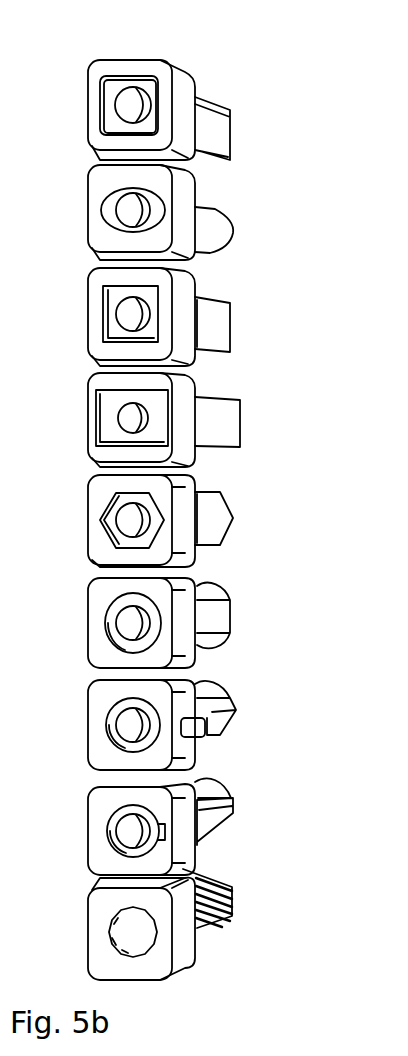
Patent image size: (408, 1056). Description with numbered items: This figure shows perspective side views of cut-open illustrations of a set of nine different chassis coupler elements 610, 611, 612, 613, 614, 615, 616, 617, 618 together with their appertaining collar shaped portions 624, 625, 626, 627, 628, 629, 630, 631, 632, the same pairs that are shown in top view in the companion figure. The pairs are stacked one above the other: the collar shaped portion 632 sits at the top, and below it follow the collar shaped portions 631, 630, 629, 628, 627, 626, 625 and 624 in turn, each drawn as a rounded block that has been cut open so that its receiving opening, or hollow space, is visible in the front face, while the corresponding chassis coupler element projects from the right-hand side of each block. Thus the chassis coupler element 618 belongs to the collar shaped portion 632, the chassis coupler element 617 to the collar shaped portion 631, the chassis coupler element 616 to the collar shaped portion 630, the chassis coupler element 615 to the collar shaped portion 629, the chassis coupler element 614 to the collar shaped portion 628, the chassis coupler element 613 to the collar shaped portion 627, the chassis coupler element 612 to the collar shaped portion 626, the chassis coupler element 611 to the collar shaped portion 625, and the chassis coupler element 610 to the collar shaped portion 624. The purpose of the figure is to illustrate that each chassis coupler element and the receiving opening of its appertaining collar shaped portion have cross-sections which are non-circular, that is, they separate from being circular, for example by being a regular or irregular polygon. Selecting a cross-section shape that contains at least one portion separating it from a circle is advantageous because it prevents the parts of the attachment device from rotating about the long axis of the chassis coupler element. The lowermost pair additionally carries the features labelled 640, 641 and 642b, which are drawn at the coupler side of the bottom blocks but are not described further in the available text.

The chassis coupler element 610 is at (218, 922).
The chassis coupler element 611 is at (215, 785).
The chassis coupler element 612 is at (220, 683).
The chassis coupler element 613 is at (217, 615).
The chassis coupler element 614 is at (230, 518).
The chassis coupler element 615 is at (225, 418).
The chassis coupler element 616 is at (213, 322).
The chassis coupler element 617 is at (216, 240).
The chassis coupler element 618 is at (220, 130).
The collar shaped portion 624 is at (97, 910).
The collar shaped portion 625 is at (97, 805).
The collar shaped portion 626 is at (97, 710).
The collar shaped portion 627 is at (97, 605).
The collar shaped portion 628 is at (95, 500).
The collar shaped portion 629 is at (95, 386).
The collar shaped portion 630 is at (97, 292).
The collar shaped portion 631 is at (97, 188).
The collar shaped portion 632 is at (95, 78).
The knurled cylindrical peg 640 is at (222, 886).
The clip tab 641 is at (230, 797).
The locking tab 642b is at (212, 720).